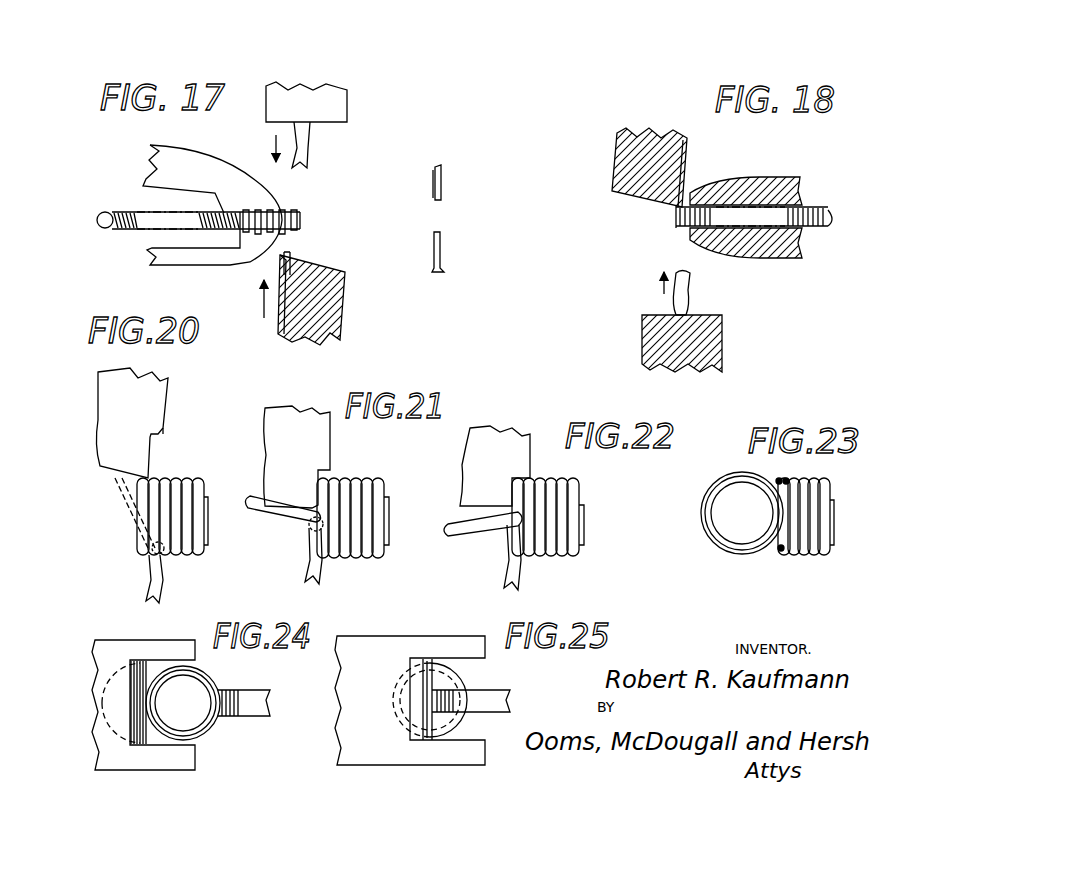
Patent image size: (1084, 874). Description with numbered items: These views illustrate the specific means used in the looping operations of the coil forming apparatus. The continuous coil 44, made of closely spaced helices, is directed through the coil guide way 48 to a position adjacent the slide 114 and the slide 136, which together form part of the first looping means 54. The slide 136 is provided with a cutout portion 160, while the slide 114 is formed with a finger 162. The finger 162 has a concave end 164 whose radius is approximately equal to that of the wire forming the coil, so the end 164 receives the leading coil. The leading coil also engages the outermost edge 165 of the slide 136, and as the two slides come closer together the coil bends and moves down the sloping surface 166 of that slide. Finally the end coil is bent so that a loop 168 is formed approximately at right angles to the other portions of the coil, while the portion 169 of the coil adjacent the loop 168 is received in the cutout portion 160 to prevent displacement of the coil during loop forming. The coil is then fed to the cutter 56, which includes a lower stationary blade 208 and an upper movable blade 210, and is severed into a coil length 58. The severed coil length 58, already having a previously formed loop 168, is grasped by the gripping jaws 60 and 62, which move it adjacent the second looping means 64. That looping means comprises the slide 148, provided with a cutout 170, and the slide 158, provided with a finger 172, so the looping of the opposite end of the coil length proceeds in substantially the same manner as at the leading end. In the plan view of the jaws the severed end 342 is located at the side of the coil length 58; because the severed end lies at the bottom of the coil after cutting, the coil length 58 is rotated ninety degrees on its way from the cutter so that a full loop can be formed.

In FIG. 18, the coil 44 is at (822, 206).
In FIG. 20, the coil 44 is at (172, 516).
In FIG. 21, the coil 44 is at (353, 518).
In FIG. 22, the coil 44 is at (548, 517).
In FIG. 23, the coil 44 is at (828, 556).
In FIG. 18, the coil guide way 48 is at (752, 178).
In FIG. 18, the first looping means 54 is at (636, 112).
In FIG. 17, the cutter 56 is at (460, 203).
In FIG. 17, the coil length 58 is at (121, 208).
In FIG. 17, the gripping jaw 60 is at (190, 160).
In FIG. 17, the gripping jaw 62 is at (170, 262).
In FIG. 17, the second looping means 64 is at (362, 118).
In FIG. 18, the slide 114 is at (656, 340).
In FIG. 18, the slide 136 is at (612, 158).
In FIG. 20, the slide 136 is at (168, 378).
In FIG. 21, the slide 136 is at (292, 408).
In FIG. 22, the slide 136 is at (498, 428).
In FIG. 24, the slide 136 is at (108, 646).
In FIG. 25, the slide 136 is at (382, 646).
In FIG. 17, the slide 148 is at (338, 326).
In FIG. 17, the slide 158 is at (288, 88).
In FIG. 18, the cutout portion 160 is at (676, 205).
In FIG. 20, the cutout portion 160 is at (158, 440).
In FIG. 21, the cutout portion 160 is at (312, 514).
In FIG. 18, the finger 162 is at (675, 296).
In FIG. 20, the finger 162 is at (162, 591).
In FIG. 21, the finger 162 is at (322, 576).
In FIG. 22, the finger 162 is at (522, 583).
In FIG. 24, the finger 162 is at (250, 690).
In FIG. 25, the finger 162 is at (482, 688).
In FIG. 18, the concave end 164 is at (682, 270).
In FIG. 20, the concave end 164 is at (162, 560).
In FIG. 20, the outermost edge 165 is at (150, 478).
In FIG. 18, the sloping surface 166 is at (630, 194).
In FIG. 20, the sloping surface 166 is at (100, 467).
In FIG. 17, the loop 168 is at (102, 232).
In FIG. 21, the loop 168 is at (278, 512).
In FIG. 22, the loop 168 is at (482, 538).
In FIG. 23, the loop 168 is at (722, 535).
In FIG. 24, the loop 168 is at (183, 703).
In FIG. 25, the loop 168 is at (462, 720).
In FIG. 21, the coil portion 169 is at (312, 476).
In FIG. 17, the cutout 170 is at (292, 250).
In FIG. 17, the finger 172 is at (306, 148).
In FIG. 17, the lower stationary blade 208 is at (442, 256).
In FIG. 17, the upper movable blade 210 is at (434, 184).
In FIG. 17, the severed end 342 is at (300, 213).